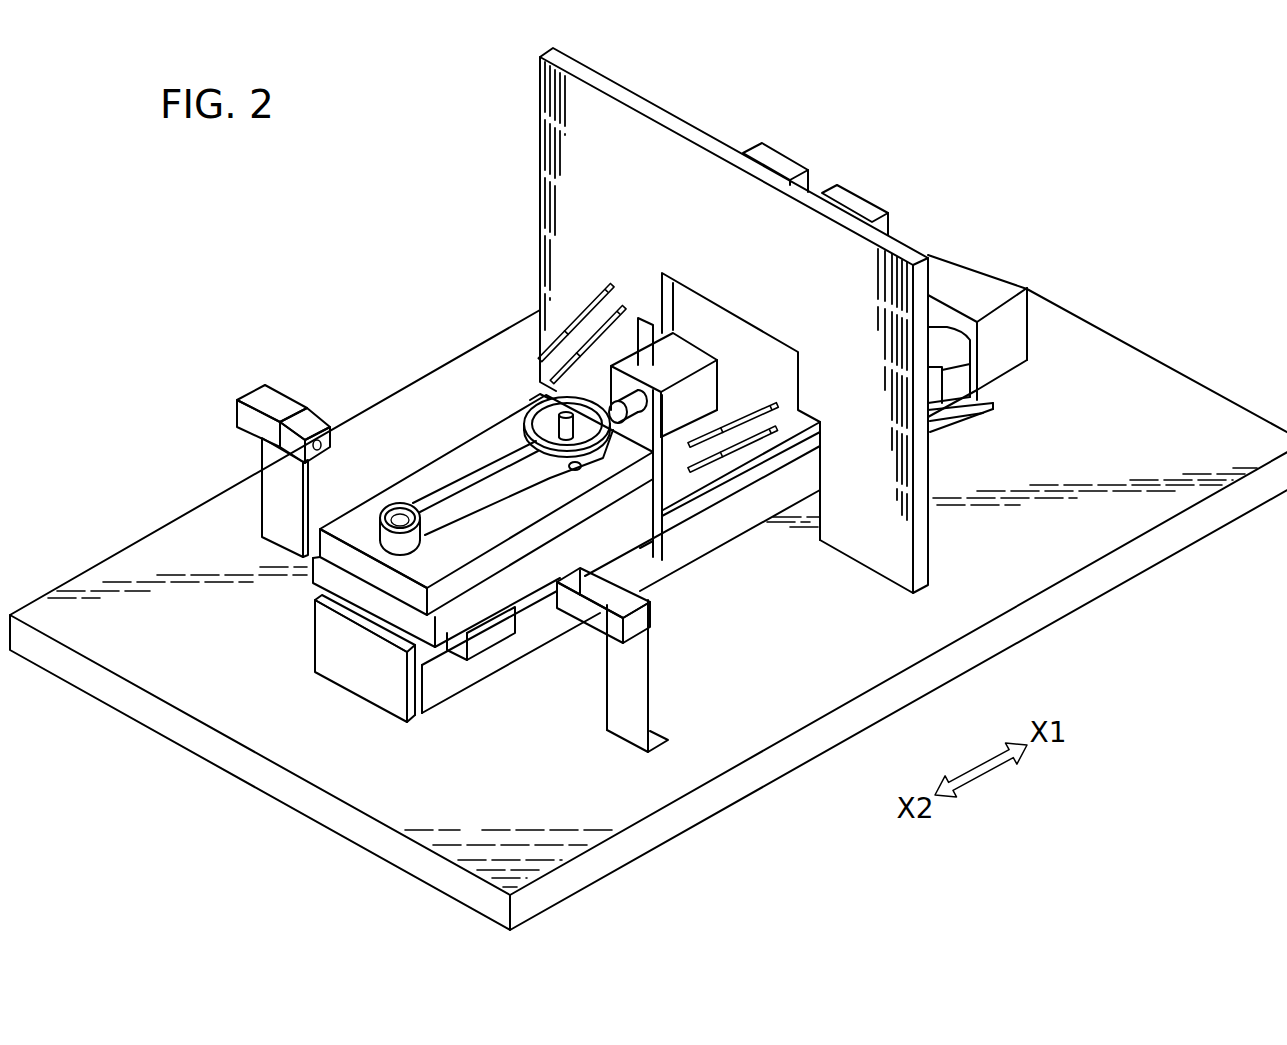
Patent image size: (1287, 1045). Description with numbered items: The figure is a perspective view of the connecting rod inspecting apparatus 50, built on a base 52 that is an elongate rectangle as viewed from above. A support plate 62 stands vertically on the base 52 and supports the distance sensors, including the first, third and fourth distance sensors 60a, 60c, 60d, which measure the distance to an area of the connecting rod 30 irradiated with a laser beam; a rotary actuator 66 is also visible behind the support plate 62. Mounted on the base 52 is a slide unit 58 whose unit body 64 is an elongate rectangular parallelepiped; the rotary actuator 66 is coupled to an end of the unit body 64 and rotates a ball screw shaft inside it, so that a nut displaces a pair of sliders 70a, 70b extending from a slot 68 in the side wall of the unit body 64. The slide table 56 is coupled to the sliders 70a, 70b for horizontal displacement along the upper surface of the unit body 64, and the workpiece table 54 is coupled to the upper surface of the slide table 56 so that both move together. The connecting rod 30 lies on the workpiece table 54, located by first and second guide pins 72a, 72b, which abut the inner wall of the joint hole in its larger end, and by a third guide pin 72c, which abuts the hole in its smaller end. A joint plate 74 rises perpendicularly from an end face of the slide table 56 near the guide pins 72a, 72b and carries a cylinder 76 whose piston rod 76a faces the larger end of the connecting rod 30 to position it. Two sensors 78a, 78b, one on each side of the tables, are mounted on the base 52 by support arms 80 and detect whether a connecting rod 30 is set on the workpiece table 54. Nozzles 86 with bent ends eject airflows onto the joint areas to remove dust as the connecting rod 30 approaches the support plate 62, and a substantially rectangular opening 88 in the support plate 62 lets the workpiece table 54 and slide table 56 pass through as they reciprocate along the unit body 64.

The connecting rod inspecting apparatus 50 is at (376, 171).
The base 52 is at (1120, 568).
The support plate 62 is at (677, 125).
The first distance sensor 60a is at (768, 157).
The third distance sensor 60c is at (857, 193).
The fourth distance sensor 60d is at (963, 383).
The rotary actuator 66 is at (992, 280).
The workpiece table 54 is at (418, 480).
The slide table 56 is at (313, 577).
The connecting rod 30 is at (460, 473).
The first guide pin 72a is at (542, 398).
The second guide pin 72b is at (570, 440).
The third guide pin 72c is at (387, 514).
The joint plate 74 is at (663, 518).
The cylinder 76 is at (683, 352).
The piston rod 76a is at (632, 403).
The opening 88 is at (753, 330).
The nozzles 86 is at (613, 302).
The unit body 64 is at (730, 523).
The slide unit 58 is at (789, 512).
The slot 68 is at (513, 610).
The slider 70a is at (632, 553).
The slider 70b is at (480, 647).
The support arms 80 is at (270, 493).
The sensor 78a is at (312, 420).
The sensor 78b is at (568, 612).